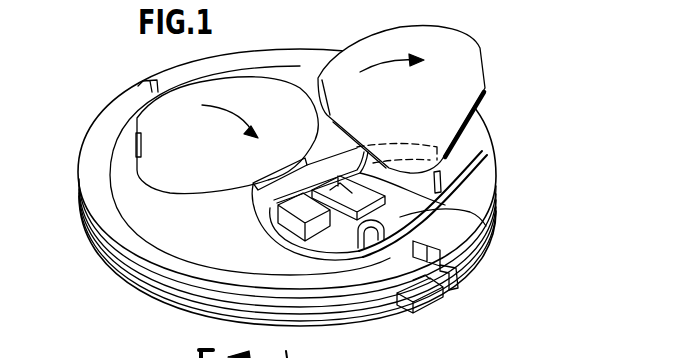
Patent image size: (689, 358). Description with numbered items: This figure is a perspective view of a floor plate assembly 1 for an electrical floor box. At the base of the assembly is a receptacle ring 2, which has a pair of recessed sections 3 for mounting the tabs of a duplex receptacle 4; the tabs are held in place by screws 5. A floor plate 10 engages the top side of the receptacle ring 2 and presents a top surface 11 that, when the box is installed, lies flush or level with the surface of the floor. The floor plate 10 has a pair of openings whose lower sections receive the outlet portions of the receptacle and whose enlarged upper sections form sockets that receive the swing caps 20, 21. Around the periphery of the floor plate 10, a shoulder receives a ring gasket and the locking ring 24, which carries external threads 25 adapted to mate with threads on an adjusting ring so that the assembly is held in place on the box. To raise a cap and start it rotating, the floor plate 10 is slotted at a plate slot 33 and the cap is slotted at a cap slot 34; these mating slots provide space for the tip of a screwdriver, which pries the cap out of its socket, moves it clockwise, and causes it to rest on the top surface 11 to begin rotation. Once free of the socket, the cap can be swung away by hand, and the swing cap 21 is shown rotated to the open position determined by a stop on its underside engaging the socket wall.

The floor plate assembly 1 is at (78, 135).
The receptacle ring 2 is at (343, 317).
The recessed sections 3 is at (405, 308).
The duplex receptacle 4 is at (480, 213).
The screws 5 is at (447, 293).
The floor plate 10 is at (131, 205).
The top surface 11 is at (160, 233).
The swing cap 20 is at (152, 130).
The swing cap 21 is at (470, 53).
The locking ring 24 is at (177, 267).
The external threads 25 is at (197, 295).
The plate slot 33 is at (403, 218).
The cap slot 34 is at (350, 135).